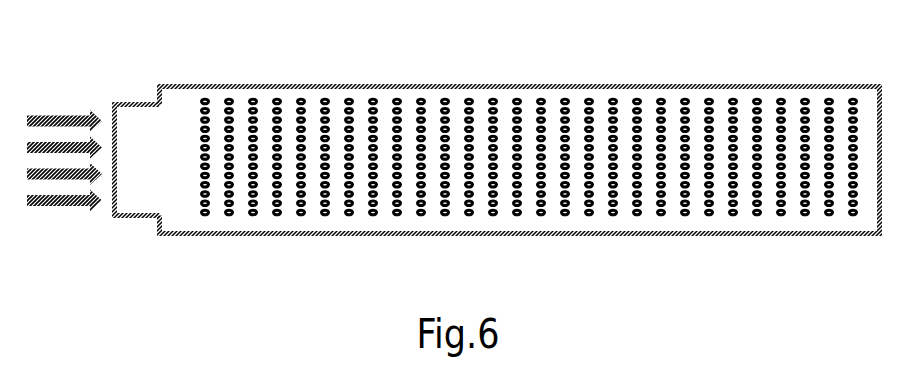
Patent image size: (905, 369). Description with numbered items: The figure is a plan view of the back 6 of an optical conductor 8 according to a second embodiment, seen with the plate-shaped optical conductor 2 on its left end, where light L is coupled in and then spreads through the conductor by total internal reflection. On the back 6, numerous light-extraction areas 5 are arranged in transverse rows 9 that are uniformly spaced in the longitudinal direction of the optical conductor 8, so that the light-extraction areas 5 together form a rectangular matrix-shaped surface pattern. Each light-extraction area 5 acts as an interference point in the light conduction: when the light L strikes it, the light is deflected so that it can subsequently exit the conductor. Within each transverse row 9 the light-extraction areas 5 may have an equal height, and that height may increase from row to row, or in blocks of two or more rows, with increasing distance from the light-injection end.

The light L is at (67, 110).
The optical conductor 2 is at (110, 214).
The light-extraction areas 5 is at (529, 112).
The back 6 is at (520, 149).
The optical conductor 8 is at (301, 84).
The transverse rows 9 is at (565, 100).